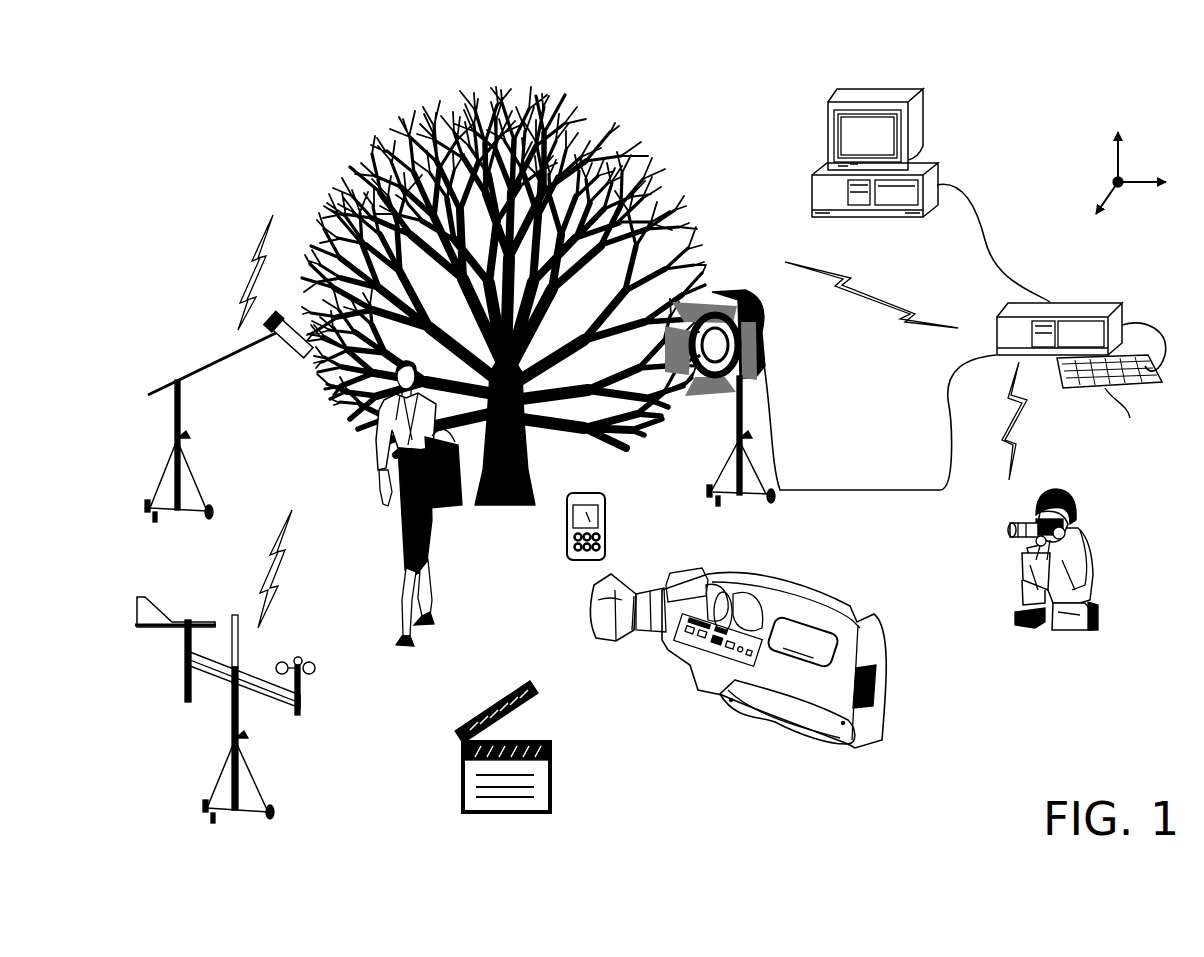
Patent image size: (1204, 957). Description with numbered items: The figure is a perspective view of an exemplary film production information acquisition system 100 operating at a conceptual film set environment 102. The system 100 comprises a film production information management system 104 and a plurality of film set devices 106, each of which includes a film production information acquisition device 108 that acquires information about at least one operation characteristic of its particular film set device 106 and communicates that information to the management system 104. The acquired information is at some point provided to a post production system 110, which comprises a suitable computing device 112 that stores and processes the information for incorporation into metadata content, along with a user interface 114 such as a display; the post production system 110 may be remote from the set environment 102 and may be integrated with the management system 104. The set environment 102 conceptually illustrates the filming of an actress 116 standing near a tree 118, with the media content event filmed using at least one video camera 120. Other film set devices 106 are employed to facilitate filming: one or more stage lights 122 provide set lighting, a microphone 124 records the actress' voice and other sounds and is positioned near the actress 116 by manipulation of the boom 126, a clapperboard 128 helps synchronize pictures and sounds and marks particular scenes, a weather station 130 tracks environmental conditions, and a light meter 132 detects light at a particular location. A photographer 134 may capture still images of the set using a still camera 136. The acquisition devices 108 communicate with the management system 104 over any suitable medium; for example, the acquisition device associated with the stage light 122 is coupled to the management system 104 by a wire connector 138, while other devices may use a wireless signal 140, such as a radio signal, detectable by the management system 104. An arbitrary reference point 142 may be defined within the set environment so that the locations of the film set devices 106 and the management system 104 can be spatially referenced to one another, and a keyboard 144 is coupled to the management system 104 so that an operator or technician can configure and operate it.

The film production information acquisition system 100 is at (1088, 690).
The film set environment 102 is at (262, 150).
The film production information management system 104 is at (1082, 348).
The film set devices 106 is at (760, 700).
The film production information acquisition device 108 is at (738, 666).
The post production system 110 is at (858, 195).
The computing device 112 is at (812, 188).
The user interface 114 is at (828, 125).
The actress 116 is at (385, 524).
The tree 118 is at (491, 508).
The video camera 120 is at (758, 706).
The stage light 122 is at (700, 406).
The microphone 124 is at (282, 360).
The boom 126 is at (229, 416).
The clapperboard 128 is at (566, 795).
The weather station 130 is at (332, 700).
The light meter 132 is at (568, 538).
The photographer 134 is at (1014, 570).
The still camera 136 is at (1010, 538).
The wire connector 138 is at (862, 490).
The wireless signal 140 is at (240, 264).
The arbitrary reference point 142 is at (1099, 178).
The keyboard 144 is at (1112, 390).